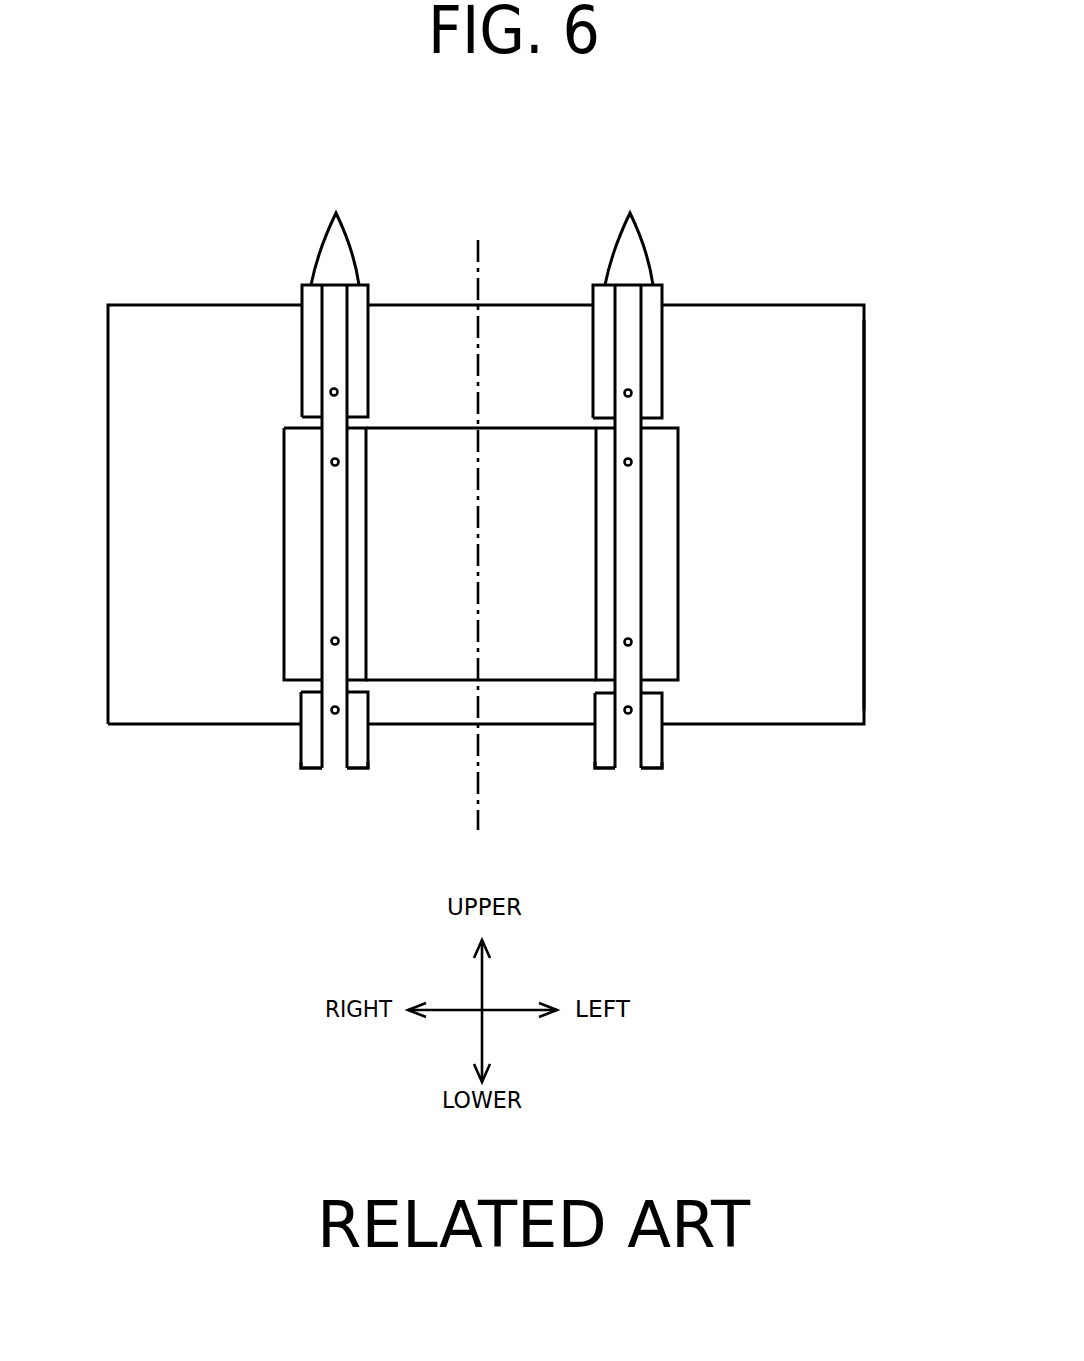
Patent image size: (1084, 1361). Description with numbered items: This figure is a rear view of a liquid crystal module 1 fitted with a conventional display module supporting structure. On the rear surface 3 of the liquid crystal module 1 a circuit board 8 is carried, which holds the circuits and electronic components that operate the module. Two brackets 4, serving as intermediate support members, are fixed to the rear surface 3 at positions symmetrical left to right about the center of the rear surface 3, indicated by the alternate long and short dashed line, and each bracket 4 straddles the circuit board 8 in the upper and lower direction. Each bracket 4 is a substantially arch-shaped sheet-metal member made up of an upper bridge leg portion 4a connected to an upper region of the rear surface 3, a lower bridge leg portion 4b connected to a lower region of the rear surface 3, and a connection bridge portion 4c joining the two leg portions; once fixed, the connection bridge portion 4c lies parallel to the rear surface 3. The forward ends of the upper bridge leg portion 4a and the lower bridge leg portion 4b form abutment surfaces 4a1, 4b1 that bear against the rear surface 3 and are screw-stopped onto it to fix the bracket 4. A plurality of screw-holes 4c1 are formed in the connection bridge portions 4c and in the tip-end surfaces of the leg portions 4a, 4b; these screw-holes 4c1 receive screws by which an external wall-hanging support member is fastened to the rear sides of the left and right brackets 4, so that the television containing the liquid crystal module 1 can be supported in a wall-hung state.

The liquid crystal module 1 is at (770, 305).
The rear surface 3 is at (837, 403).
The bracket 4 is at (335, 770).
The upper bridge leg portion 4a is at (292, 288).
The abutment surface 4a1 is at (482, 232).
The lower bridge leg portion 4b is at (292, 693).
The abutment surface 4b1 is at (315, 770).
The connection bridge portion 4c is at (360, 435).
The screw-hole 4c1 is at (331, 461).
The circuit board 8 is at (408, 428).